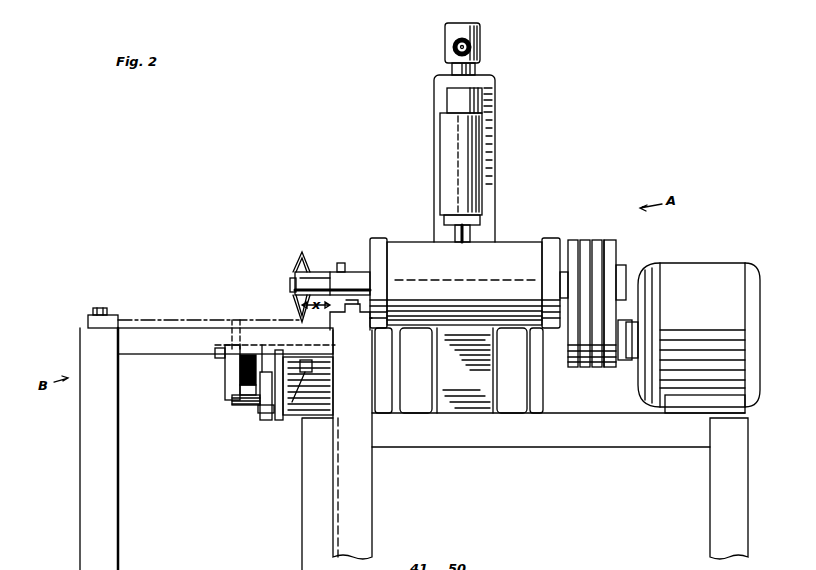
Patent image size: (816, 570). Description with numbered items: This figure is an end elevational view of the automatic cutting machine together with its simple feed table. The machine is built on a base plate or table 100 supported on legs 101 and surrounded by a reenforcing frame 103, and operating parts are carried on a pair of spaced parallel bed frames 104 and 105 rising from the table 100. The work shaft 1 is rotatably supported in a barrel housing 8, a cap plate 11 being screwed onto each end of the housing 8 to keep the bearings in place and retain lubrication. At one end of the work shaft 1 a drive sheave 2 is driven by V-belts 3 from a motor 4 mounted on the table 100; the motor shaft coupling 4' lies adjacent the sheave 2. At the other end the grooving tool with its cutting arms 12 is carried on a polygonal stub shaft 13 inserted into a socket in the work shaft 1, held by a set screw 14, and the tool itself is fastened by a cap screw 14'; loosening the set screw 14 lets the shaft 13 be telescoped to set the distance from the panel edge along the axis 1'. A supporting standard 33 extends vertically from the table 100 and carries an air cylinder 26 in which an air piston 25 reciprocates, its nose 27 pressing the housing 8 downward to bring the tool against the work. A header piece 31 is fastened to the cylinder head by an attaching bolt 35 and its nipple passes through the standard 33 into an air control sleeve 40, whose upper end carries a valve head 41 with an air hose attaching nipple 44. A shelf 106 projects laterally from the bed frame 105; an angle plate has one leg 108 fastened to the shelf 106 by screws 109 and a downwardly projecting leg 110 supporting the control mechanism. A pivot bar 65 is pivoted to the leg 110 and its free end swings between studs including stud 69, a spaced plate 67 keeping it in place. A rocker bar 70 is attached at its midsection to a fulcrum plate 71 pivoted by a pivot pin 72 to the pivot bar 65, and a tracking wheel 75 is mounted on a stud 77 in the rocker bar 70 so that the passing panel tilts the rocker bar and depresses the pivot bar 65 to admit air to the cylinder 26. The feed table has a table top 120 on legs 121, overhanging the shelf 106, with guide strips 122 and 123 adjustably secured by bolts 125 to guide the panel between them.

The work shaft 1 is at (332, 274).
The axis line 1' is at (209, 305).
The drive pulley or sheave 2 is at (616, 248).
The V-belts 3 is at (612, 262).
The motor 4 is at (699, 338).
The motor shaft coupling 4' is at (623, 355).
The barrel housing 8 is at (464, 283).
The cap plate 11 is at (380, 236).
The cutting arms 12 is at (302, 252).
The stub shaft 13 is at (318, 272).
The set screw 14 is at (343, 240).
The cap screw 14' is at (274, 280).
The air piston 25 is at (480, 222).
The air cylinder 26 is at (440, 143).
The nose 27 is at (470, 236).
The header piece 31 is at (478, 100).
The supporting standard 33 is at (434, 97).
The attaching bolt 35 is at (472, 70).
The air control sleeve 40 is at (452, 69).
The valve head 41 is at (480, 34).
The air hose attaching nipple 44 is at (470, 47).
The pivot bar 65 is at (272, 415).
The spaced plate 67 is at (268, 408).
The stud or bolt 69 is at (262, 345).
The rocker bar 70 is at (232, 365).
The fulcrum plate 71 is at (250, 382).
The pivot pin 72 is at (240, 400).
The tracking wheel 75 is at (246, 372).
The stud 77 is at (215, 350).
The base plate or table 100 is at (563, 415).
The legs 101 is at (302, 517).
The reenforcing frame 103 is at (505, 448).
The bed frame 104 is at (528, 388).
The bed frame 105 is at (396, 382).
The shelf 106 is at (307, 366).
The leg of angle shaped plate 108 is at (275, 373).
The bolts or screws 109 is at (305, 372).
The downwardly projecting leg 110 is at (278, 420).
The table top 120 is at (140, 347).
The legs 121 is at (80, 458).
The guide strip 122 is at (115, 315).
The guide strip 123 is at (372, 318).
The bolts 125 is at (99, 308).